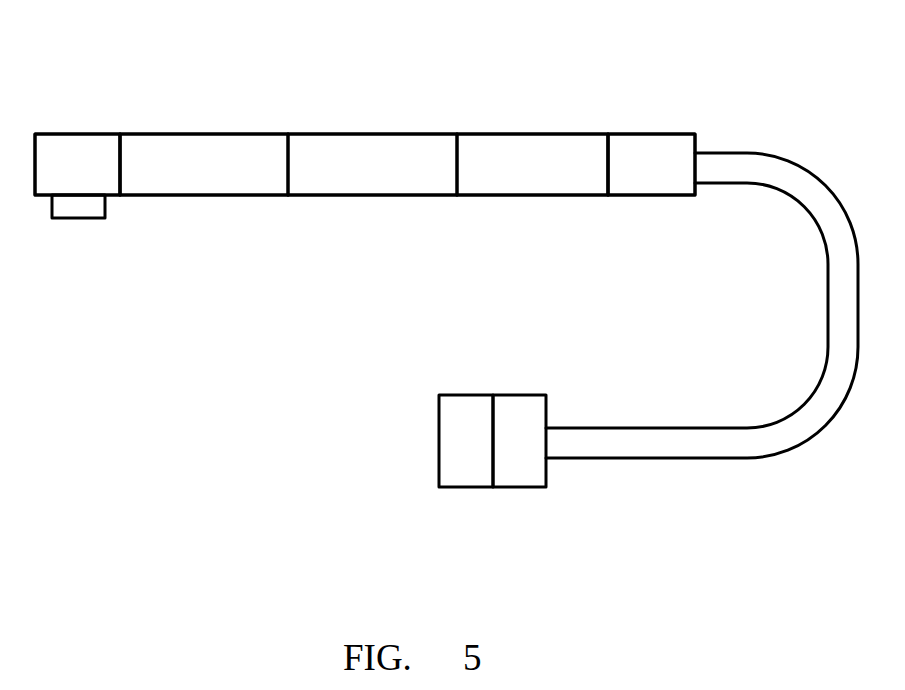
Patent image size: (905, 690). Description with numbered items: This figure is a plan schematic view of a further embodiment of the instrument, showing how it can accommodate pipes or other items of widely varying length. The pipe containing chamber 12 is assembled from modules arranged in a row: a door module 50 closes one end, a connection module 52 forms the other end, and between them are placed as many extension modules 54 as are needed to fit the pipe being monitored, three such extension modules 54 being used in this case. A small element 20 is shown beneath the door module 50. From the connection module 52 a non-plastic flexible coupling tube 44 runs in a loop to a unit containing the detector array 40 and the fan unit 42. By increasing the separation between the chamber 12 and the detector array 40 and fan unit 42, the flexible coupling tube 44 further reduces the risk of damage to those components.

The chamber 12 is at (362, 133).
The door module 50 is at (70, 147).
The connection module 52 is at (652, 157).
The extension modules 54 is at (537, 182).
The connector / button 20 is at (80, 210).
The non-plastic flexible coupling tube 44 is at (758, 442).
The detector array 40 is at (515, 473).
The fan unit 42 is at (466, 473).